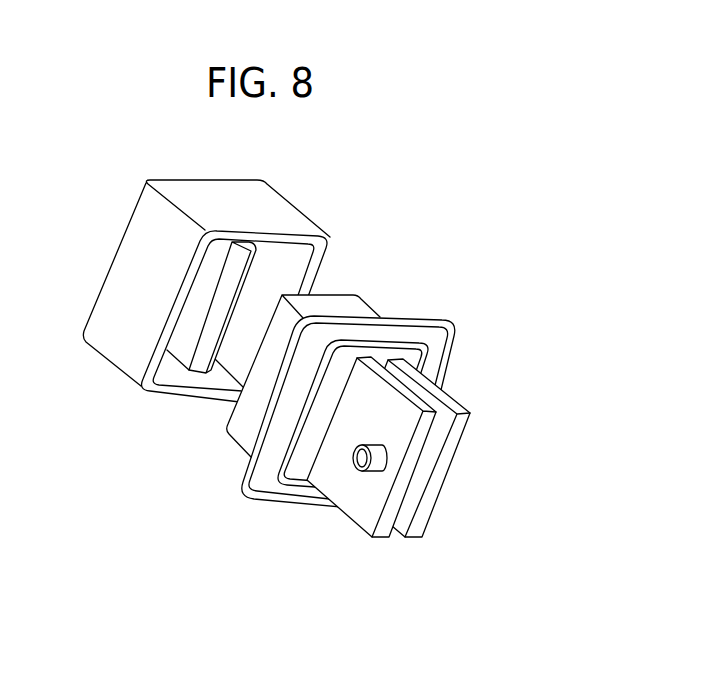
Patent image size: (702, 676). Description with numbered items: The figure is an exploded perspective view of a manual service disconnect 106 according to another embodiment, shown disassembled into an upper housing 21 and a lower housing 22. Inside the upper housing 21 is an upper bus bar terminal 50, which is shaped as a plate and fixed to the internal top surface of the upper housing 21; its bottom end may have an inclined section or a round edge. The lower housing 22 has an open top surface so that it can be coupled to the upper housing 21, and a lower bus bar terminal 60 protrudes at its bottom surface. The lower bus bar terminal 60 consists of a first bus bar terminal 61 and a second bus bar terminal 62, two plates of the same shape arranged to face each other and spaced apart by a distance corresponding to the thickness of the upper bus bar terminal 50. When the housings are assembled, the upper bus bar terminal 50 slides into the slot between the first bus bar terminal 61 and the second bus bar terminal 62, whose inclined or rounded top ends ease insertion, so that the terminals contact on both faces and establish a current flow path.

The manual service disconnect 106 is at (413, 207).
The upper housing 21 is at (210, 178).
The upper bus bar terminal 50 is at (227, 283).
The lower housing 22 is at (433, 318).
The lower bus bar terminal 60 is at (512, 451).
The first bus bar terminal 61 is at (393, 513).
The second bus bar terminal 62 is at (452, 443).